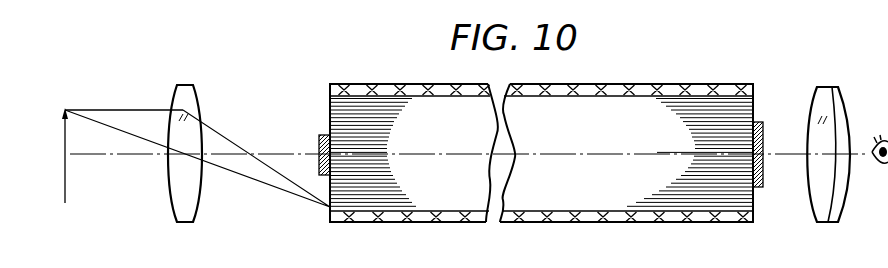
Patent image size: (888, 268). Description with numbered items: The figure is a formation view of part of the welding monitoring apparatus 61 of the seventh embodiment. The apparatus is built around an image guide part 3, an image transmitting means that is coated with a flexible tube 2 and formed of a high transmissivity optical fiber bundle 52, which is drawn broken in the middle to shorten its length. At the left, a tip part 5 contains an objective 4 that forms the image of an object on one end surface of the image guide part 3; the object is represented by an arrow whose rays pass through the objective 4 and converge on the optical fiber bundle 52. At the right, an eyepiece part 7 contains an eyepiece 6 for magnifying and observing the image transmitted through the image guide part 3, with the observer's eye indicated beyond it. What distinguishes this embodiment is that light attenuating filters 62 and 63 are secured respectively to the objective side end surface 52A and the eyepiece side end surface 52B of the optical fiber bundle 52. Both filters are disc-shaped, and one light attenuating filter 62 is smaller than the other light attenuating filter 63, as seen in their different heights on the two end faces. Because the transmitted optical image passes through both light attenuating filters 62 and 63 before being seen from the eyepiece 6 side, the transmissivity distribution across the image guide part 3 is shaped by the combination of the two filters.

The flexible tube 2 is at (668, 215).
The image guide part 3 is at (409, 82).
The objective 4 is at (190, 95).
The tip part 5 is at (191, 80).
The eyepiece 6 is at (825, 195).
The eyepiece part 7 is at (831, 84).
The optical fiber bundle 52 is at (443, 190).
The objective side end surface 52A is at (330, 190).
The eyepiece side end surface 52B is at (755, 198).
The welding monitoring apparatus 61 is at (661, 82).
The light attenuating filter 62 is at (323, 134).
The light attenuating filter 63 is at (760, 122).